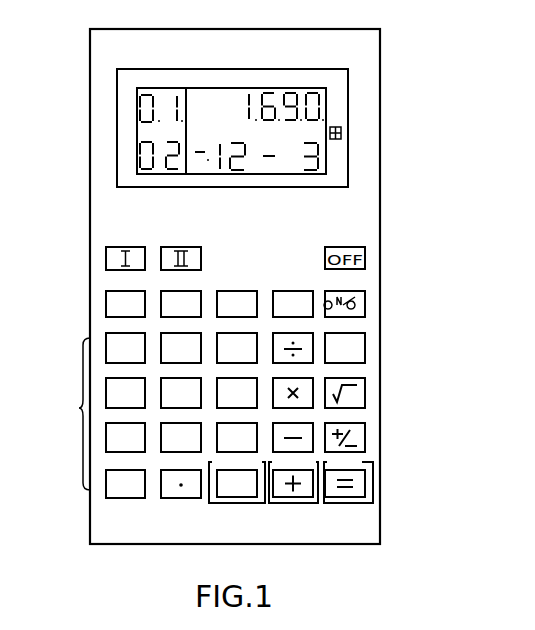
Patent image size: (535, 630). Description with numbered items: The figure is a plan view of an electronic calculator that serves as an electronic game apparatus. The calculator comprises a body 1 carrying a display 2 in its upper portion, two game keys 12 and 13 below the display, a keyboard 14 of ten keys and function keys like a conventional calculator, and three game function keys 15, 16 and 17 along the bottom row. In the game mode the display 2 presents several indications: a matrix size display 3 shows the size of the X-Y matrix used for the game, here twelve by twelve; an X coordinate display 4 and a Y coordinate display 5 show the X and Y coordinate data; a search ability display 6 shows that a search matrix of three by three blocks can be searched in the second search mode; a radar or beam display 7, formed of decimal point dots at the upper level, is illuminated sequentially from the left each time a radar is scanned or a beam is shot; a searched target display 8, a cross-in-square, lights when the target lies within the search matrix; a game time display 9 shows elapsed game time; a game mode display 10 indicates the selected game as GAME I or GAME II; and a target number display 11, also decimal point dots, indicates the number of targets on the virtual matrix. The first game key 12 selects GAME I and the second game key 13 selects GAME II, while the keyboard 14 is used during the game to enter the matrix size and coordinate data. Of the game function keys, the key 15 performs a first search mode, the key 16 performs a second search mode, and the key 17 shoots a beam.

The body 1 is at (365, 205).
The display 2 is at (338, 107).
The matrix size display 3 is at (228, 165).
The X coordinate display 4 is at (136, 98).
The Y coordinate display 5 is at (136, 145).
The search ability display 6 is at (317, 160).
The radar or beam display 7 is at (201, 123).
The searched target display 8 is at (343, 133).
The game time display 9 is at (273, 95).
The game mode display 10 is at (150, 68).
The target number display 11 is at (192, 175).
The first game key 12 is at (102, 268).
The second game key 13 is at (152, 273).
The keyboard 14 is at (79, 408).
The key for first search mode 15 is at (243, 510).
The key for second search mode 16 is at (293, 510).
The beam key 17 is at (348, 510).